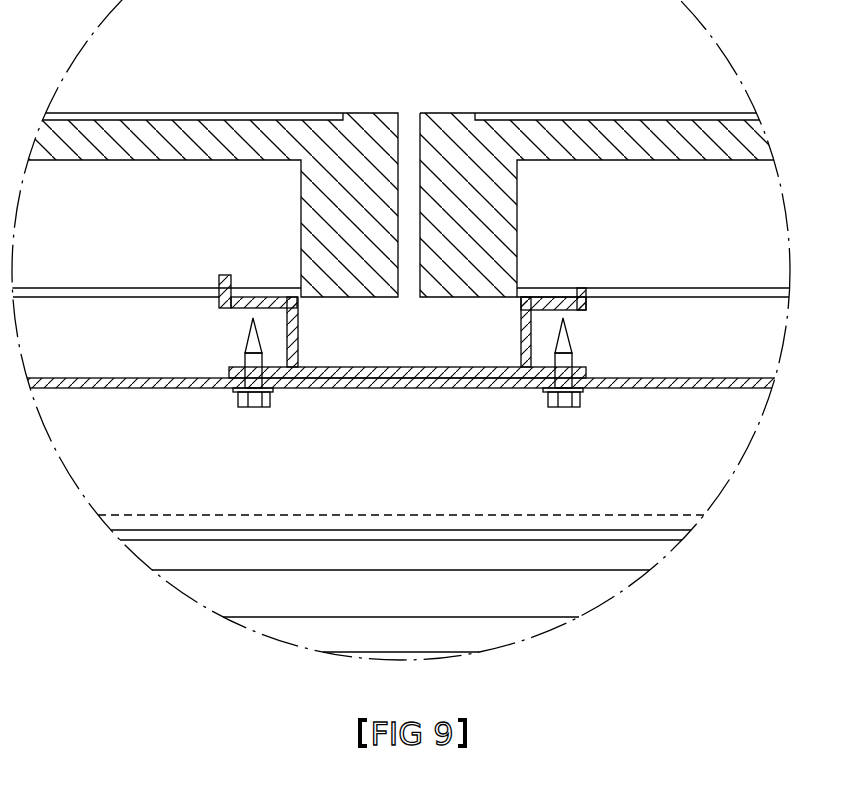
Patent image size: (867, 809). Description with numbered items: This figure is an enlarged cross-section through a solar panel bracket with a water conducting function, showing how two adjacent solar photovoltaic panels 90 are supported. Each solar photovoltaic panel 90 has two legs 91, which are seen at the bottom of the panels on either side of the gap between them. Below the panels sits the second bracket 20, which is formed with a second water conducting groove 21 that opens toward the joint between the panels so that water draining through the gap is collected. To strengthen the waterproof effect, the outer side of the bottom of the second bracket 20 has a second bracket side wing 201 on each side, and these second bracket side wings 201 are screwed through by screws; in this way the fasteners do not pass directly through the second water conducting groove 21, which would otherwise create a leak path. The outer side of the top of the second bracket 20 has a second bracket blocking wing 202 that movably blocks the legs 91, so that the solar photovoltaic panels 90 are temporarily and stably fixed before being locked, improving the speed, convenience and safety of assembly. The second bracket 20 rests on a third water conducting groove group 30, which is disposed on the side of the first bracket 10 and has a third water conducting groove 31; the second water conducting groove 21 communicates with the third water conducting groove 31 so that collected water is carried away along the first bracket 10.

The first bracket 10 is at (380, 603).
The second bracket 20 is at (590, 309).
The second bracket side wing 201 is at (233, 368).
The second bracket blocking wing 202 is at (222, 282).
The second water conducting groove 21 is at (423, 350).
The third water conducting groove group 30 is at (208, 393).
The third water conducting groove 31 is at (314, 511).
The solar photovoltaic panel 90 is at (245, 128).
The leg 91 is at (252, 290).